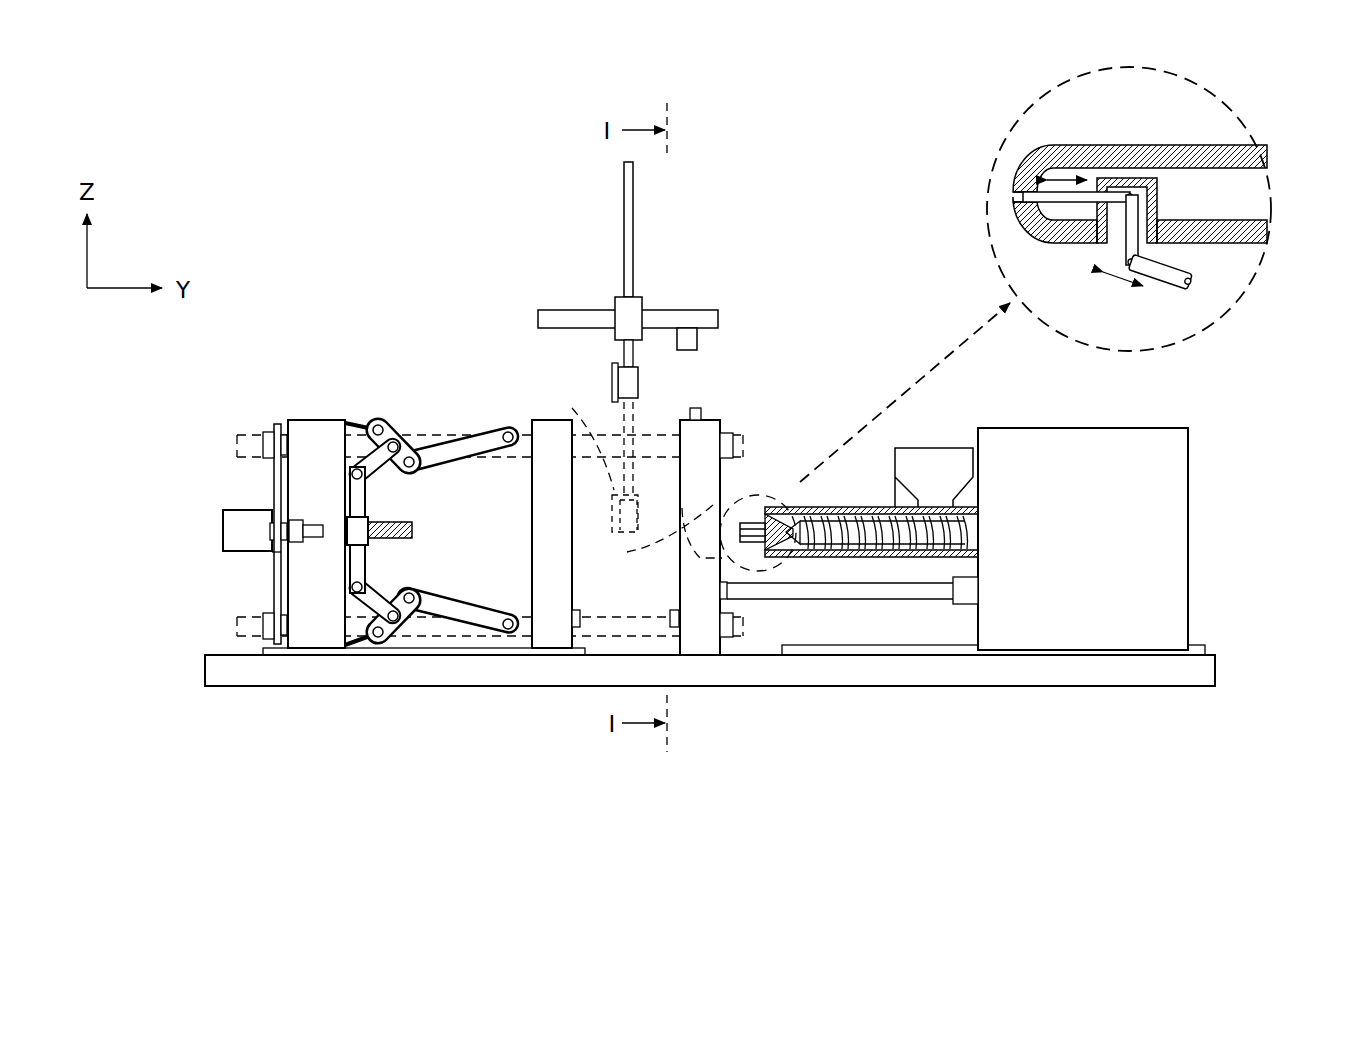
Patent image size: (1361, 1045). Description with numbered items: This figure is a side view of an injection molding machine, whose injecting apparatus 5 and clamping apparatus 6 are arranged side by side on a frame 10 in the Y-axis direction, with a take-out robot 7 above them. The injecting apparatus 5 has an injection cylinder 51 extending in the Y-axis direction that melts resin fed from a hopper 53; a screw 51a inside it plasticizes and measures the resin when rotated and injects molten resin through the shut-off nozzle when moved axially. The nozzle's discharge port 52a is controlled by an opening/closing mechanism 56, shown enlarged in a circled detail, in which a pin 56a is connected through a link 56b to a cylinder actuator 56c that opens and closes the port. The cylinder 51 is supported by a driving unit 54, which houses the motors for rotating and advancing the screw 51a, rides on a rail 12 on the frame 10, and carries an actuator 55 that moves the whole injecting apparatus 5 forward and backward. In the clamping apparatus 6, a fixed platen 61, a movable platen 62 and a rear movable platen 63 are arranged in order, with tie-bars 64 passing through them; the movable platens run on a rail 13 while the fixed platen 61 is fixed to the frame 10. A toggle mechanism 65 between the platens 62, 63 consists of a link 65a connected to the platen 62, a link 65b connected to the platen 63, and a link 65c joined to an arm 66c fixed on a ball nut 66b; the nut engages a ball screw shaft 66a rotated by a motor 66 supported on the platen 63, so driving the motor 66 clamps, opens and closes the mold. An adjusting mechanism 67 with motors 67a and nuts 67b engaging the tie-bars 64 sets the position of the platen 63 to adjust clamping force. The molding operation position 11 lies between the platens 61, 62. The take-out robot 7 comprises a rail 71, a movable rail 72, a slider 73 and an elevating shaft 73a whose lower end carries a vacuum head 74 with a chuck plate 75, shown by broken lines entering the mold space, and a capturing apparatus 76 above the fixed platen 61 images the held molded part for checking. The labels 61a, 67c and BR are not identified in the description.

The injecting apparatus 5 is at (1258, 453).
The clamping apparatus 6 is at (424, 355).
The take-out robot 7 is at (545, 282).
The frame 10 is at (1183, 688).
The molding operation position 11 is at (642, 470).
The rail 12 is at (895, 652).
The rail 13 is at (430, 650).
The injection cylinder 51 is at (905, 558).
The screw 51a is at (840, 553).
The discharge port 52a is at (1015, 193).
The hopper 53 is at (935, 448).
The driving unit 54 is at (1188, 562).
The actuator 55 is at (965, 604).
The opening/closing mechanism 56 is at (1238, 265).
The pin 56a is at (1050, 196).
The link 56b is at (1138, 212).
The actuator 56c is at (1165, 290).
The fixed platen 61 is at (712, 655).
The nozzle contact region 61a is at (627, 552).
The movable platen 62 is at (553, 650).
The movable platen 63 is at (298, 648).
The tie-bars 64 is at (235, 452).
The toggle mechanism 65 is at (458, 415).
The link 65a is at (472, 447).
The link 65b is at (390, 428).
The link 65c is at (362, 468).
The motor 66 is at (223, 530).
The ball screw shaft 66a is at (413, 533).
The ball nut 66b is at (347, 530).
The arm 66c is at (366, 507).
The adjusting mechanism 67 is at (271, 418).
The motors 67a is at (295, 518).
The nuts 67b is at (272, 428).
The drive plate 67c is at (272, 552).
The rail 71 is at (700, 338).
The movable rail 72 is at (672, 310).
The slider 73 is at (618, 297).
The elevating shaft 73a is at (634, 222).
The vacuum head 74 is at (640, 392).
The chuck plate 75 is at (612, 380).
The capturing apparatus 76 is at (702, 414).
The bracket BR is at (579, 612).